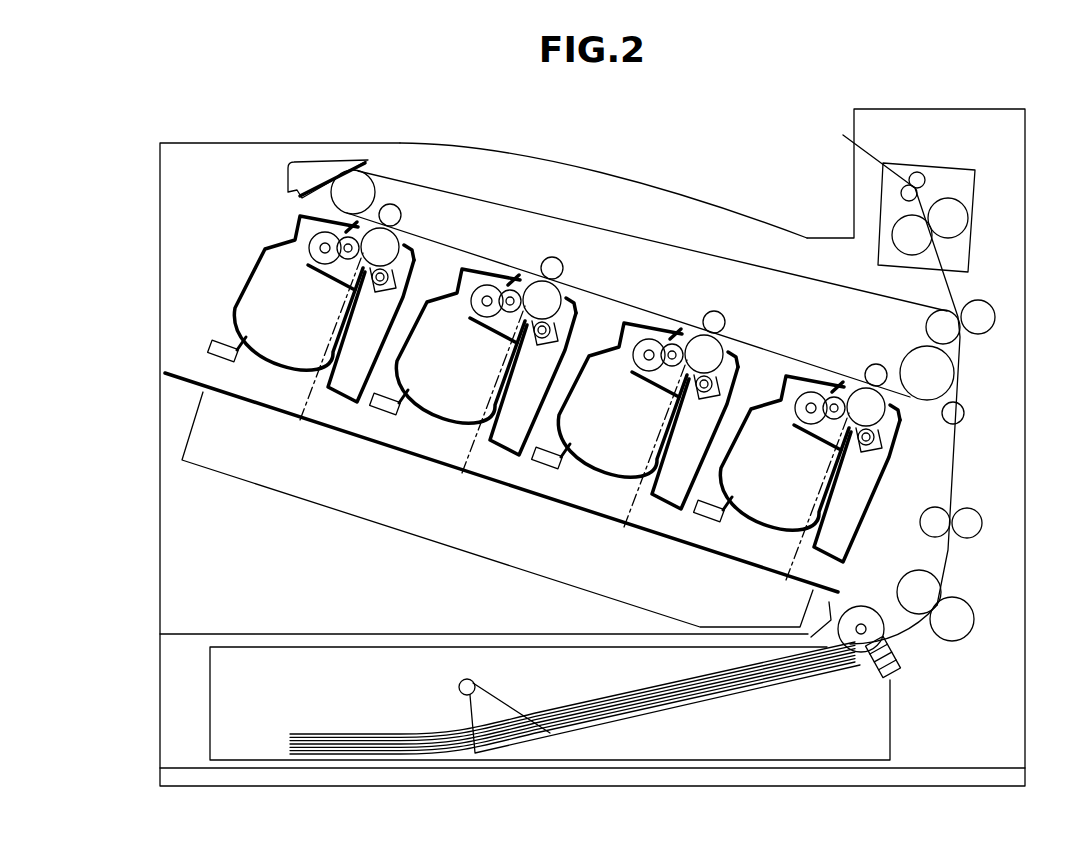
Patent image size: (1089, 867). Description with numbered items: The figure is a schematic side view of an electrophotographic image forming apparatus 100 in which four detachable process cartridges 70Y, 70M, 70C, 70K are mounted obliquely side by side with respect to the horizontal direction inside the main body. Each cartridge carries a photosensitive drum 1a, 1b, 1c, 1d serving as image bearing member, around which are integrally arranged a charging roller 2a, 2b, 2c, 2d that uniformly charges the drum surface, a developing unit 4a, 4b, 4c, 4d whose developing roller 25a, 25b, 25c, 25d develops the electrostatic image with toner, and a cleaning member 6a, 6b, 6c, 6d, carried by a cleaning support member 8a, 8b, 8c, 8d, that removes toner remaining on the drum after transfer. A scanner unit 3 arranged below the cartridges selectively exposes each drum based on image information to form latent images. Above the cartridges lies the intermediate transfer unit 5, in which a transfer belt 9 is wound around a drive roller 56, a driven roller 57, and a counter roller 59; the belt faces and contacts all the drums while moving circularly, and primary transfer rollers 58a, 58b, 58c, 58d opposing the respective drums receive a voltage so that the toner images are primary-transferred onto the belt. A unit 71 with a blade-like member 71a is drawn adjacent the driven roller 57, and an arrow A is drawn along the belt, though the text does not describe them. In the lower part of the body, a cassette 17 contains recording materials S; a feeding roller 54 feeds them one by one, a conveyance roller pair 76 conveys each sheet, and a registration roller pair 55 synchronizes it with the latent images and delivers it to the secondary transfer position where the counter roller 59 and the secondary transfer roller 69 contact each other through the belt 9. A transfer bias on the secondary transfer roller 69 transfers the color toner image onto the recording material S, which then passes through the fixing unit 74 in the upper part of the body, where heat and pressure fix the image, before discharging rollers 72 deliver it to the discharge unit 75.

The image forming apparatus 100 is at (220, 143).
The belt cleaning device 71 is at (308, 129).
The cleaning blade 71a is at (307, 168).
The driven roller 57 is at (368, 183).
The intermediate transfer unit 5 is at (700, 263).
The transfer belt 9 is at (605, 227).
The discharge unit 75 is at (765, 222).
The discharging rollers 72 is at (915, 172).
The fixing unit 74 is at (926, 170).
The primary transfer roller 58a is at (393, 205).
The primary transfer roller 58b is at (538, 252).
The primary transfer roller 58c is at (704, 297).
The primary transfer roller 58d is at (885, 348).
The photosensitive drum 1a is at (395, 240).
The photosensitive drum 1b is at (567, 286).
The photosensitive drum 1c is at (727, 340).
The photosensitive drum 1d is at (857, 376).
The cleaning member 6a is at (413, 254).
The cleaning member 6b is at (595, 297).
The cleaning member 6c is at (757, 349).
The cleaning member 6d is at (917, 434).
The developing unit 4a is at (283, 258).
The developing unit 4b is at (460, 341).
The developing unit 4c is at (622, 395).
The developing unit 4d is at (784, 447).
The developing roller 25a is at (324, 265).
The developing roller 25b is at (488, 326).
The developing roller 25c is at (650, 380).
The developing roller 25d is at (811, 433).
The charging roller 2a is at (375, 296).
The charging roller 2b is at (533, 384).
The charging roller 2c is at (695, 438).
The charging roller 2d is at (857, 491).
The cleaning support member 8a is at (224, 340).
The cleaning support member 8b is at (382, 438).
The cleaning support member 8c is at (544, 490).
The cleaning support member 8d is at (707, 543).
The process cartridge 70Y is at (331, 304).
The process cartridge 70M is at (491, 367).
The process cartridge 70C is at (652, 412).
The process cartridge 70K is at (813, 463).
The scanner unit 3 is at (392, 530).
The cassette 17 is at (687, 747).
The recording material S is at (953, 290).
The feeding roller 54 is at (858, 642).
The conveyance roller pair 76 is at (950, 632).
The registration roller pair 55 is at (968, 538).
The drive roller 56 is at (940, 378).
The counter roller 59 is at (953, 338).
The secondary transfer roller 69 is at (995, 320).
The belt rotation direction A is at (679, 233).